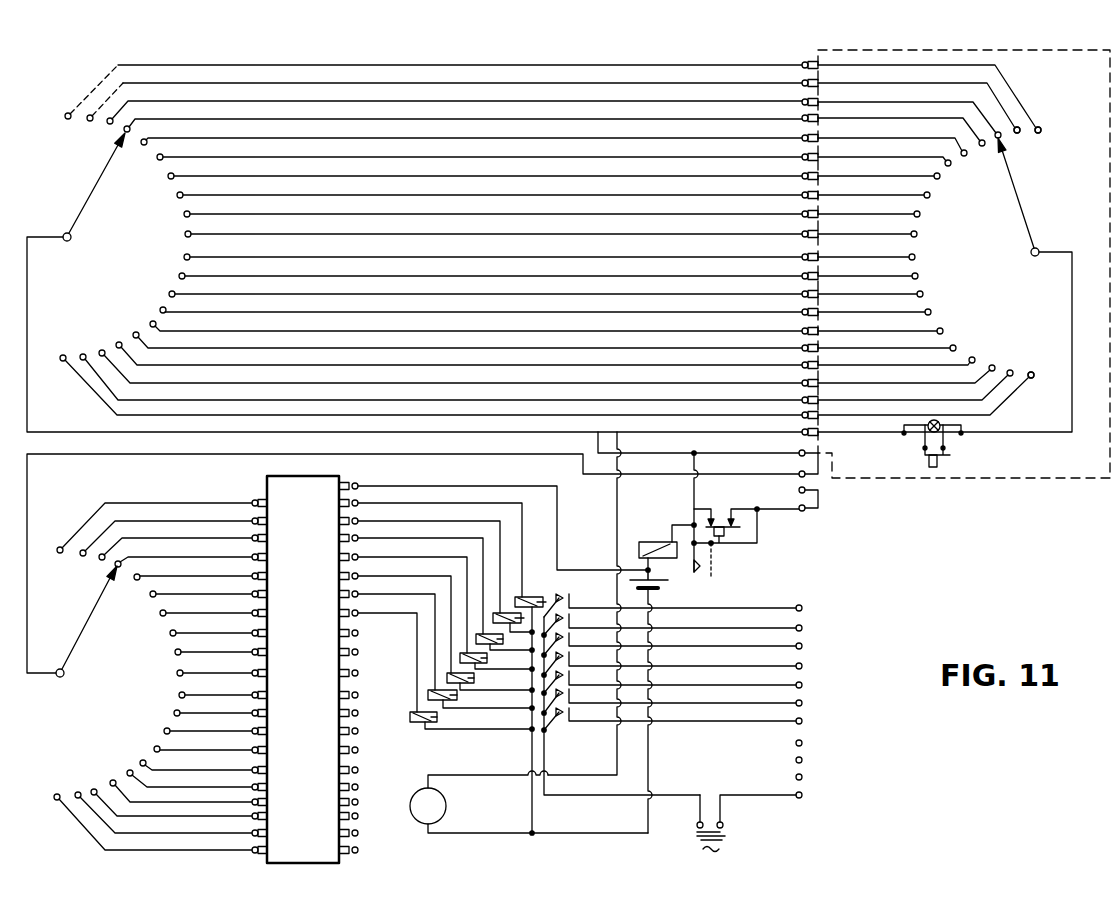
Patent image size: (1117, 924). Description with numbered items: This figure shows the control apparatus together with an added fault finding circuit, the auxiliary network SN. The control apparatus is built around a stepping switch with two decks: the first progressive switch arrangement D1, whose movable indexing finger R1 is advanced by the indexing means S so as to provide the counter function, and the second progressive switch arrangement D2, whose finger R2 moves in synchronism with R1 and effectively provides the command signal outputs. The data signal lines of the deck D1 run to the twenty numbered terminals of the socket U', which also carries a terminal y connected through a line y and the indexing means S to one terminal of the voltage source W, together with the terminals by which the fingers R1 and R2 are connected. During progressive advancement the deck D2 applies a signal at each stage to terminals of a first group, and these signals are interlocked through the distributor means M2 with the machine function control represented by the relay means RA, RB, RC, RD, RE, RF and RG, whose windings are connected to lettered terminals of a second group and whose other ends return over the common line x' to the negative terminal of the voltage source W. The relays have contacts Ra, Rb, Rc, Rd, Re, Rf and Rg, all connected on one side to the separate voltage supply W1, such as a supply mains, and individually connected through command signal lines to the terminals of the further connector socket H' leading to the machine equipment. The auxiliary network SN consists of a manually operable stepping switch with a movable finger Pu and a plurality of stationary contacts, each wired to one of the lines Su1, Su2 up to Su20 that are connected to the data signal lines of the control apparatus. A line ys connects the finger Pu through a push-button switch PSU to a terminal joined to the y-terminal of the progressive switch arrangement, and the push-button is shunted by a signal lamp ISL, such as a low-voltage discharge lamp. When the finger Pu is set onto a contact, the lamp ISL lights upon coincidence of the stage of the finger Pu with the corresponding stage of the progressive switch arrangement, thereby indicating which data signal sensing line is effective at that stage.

The first progressive switch arrangement D1 is at (428, 240).
The movable indexing finger R1 is at (86, 200).
The socket U' is at (797, 271).
The auxiliary network SN is at (995, 480).
The movable finger Pu is at (1016, 190).
The line Su1 is at (1023, 105).
The line Su2 is at (1030, 120).
The line Su20 is at (1016, 386).
The signal lamp ISL is at (957, 432).
The push-button switch PSU is at (927, 462).
The line ys is at (1030, 434).
The second progressive switch arrangement D2 is at (148, 676).
The movable indexing finger R2 is at (84, 631).
The distributor means M2 is at (305, 660).
The relay means RA is at (526, 596).
The relay means RB is at (509, 612).
The relay means RC is at (503, 639).
The relay means RD is at (487, 658).
The relay means RE is at (474, 678).
The relay means RF is at (457, 695).
The relay means RG is at (437, 717).
The relay contact Ra is at (572, 598).
The relay contact Rb is at (572, 618).
The relay contact Rc is at (572, 637).
The relay contact Rd is at (572, 656).
The relay contact Re is at (572, 675).
The relay contact Rf is at (572, 693).
The relay contact Rg is at (572, 712).
The connector socket H' is at (791, 684).
The terminal and line y is at (600, 773).
The common line x' is at (488, 766).
The voltage source W is at (662, 587).
The separate voltage supply W1 is at (728, 835).
The indexing means S is at (529, 810).